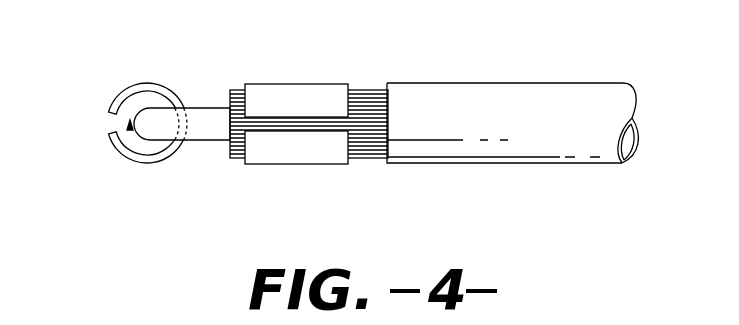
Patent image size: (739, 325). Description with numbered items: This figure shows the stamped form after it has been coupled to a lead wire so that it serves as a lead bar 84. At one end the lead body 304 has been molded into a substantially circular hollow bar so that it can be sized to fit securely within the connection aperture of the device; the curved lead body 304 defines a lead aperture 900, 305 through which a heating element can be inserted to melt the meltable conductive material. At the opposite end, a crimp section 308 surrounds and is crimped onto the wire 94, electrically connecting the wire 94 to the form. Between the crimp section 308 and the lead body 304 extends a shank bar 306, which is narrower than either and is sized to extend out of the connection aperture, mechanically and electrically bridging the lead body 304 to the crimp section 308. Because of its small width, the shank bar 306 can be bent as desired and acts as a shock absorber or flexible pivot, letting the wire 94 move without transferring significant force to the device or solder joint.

The lead body 304 is at (140, 100).
The shank bar 306 is at (212, 120).
The crimp section 308 is at (315, 90).
The wire 94 is at (537, 93).
The lead aperture 900 is at (124, 108).
The lead aperture 305 is at (125, 155).
The lead bar 84 is at (195, 178).